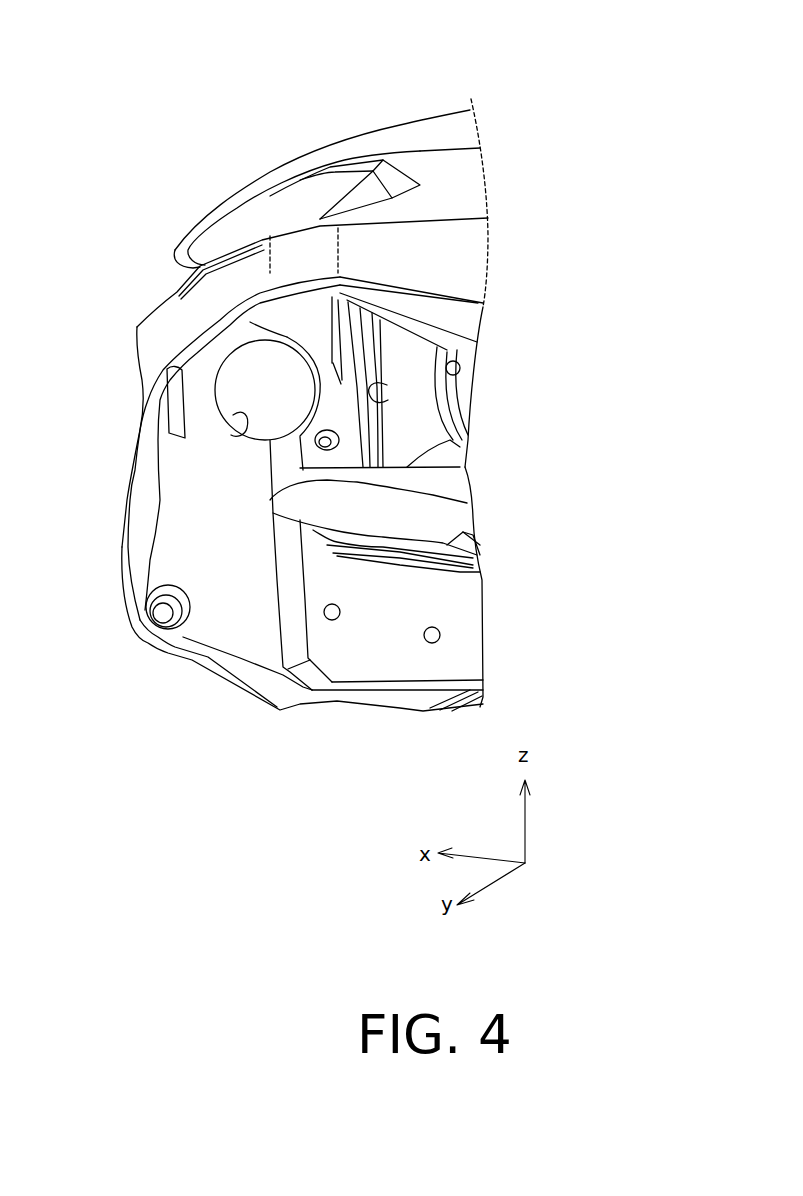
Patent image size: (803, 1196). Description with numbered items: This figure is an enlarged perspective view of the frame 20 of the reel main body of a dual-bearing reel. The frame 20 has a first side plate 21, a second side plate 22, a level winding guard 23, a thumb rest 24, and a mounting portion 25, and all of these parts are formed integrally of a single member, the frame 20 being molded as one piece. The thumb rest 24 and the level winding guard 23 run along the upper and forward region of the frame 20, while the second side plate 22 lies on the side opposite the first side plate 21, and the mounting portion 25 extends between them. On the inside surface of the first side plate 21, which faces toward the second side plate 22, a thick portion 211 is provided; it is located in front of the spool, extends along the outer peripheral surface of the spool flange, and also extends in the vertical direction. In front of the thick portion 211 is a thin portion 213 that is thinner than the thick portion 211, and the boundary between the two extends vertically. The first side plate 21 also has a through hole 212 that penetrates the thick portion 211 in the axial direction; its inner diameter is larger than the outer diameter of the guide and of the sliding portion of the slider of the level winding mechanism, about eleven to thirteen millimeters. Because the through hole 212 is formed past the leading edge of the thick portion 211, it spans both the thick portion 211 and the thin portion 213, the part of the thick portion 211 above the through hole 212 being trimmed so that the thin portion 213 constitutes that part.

The frame 20 is at (402, 122).
The first side plate 21 is at (217, 690).
The second side plate 22 is at (480, 262).
The level winding guard 23 is at (177, 302).
The thumb rest 24 is at (263, 175).
The mounting portion 25 is at (450, 485).
The thick portion 211 is at (360, 635).
The through hole 212 is at (253, 437).
The thin portion 213 is at (212, 618).